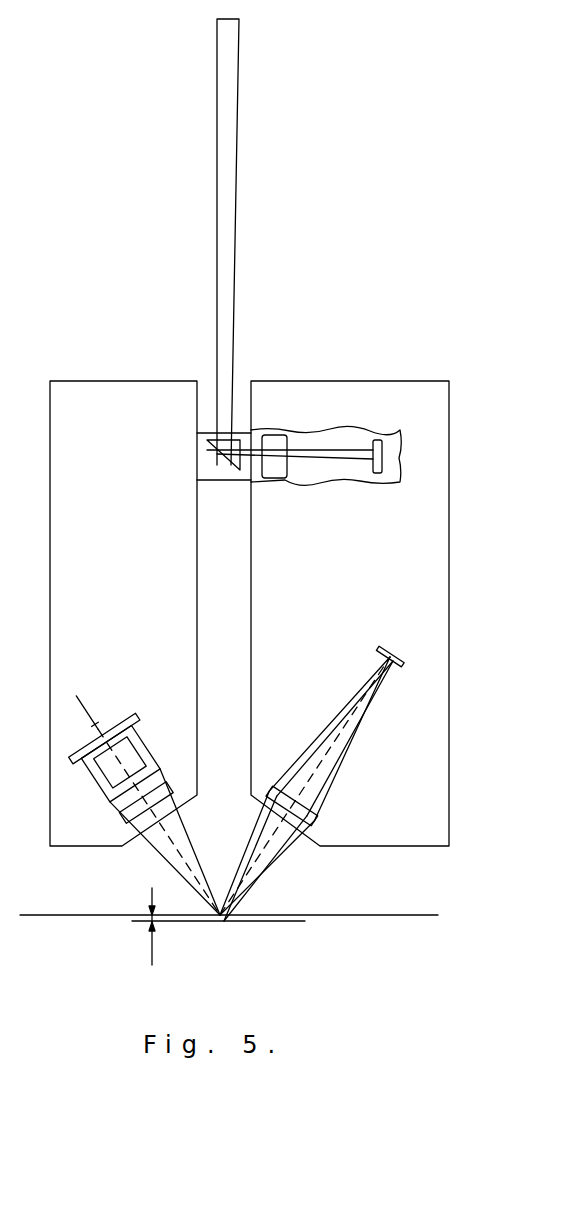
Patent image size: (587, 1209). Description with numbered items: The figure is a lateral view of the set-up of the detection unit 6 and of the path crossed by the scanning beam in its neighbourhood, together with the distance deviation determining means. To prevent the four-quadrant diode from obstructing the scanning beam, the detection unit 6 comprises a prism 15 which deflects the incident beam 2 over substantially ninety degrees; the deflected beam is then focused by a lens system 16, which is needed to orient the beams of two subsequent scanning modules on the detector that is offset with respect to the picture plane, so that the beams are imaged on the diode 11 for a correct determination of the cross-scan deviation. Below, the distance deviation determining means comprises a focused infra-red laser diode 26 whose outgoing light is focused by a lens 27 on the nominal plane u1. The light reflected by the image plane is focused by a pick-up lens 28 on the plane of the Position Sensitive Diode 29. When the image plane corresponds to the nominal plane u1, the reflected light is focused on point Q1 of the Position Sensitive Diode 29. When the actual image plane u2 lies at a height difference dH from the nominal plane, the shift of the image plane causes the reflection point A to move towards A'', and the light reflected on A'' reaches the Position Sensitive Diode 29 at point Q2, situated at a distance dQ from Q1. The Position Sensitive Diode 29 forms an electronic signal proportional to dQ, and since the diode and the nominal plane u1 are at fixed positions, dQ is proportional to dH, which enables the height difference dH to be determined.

The incident beam 2 is at (234, 242).
The prism 15 is at (215, 448).
The lens system 16 is at (270, 480).
The detection unit 6 is at (320, 483).
The diode 11 is at (376, 475).
The focused infra-red laser diode 26 is at (137, 735).
The lens 27 is at (172, 788).
The pick-up lens 28 is at (274, 797).
The Position Sensitive Diode 29 is at (410, 653).
The distance between Q2 and Q1 dQ is at (390, 648).
The point Q1 is at (393, 665).
The point Q2 is at (385, 655).
The point A is at (188, 902).
The point A'' is at (242, 952).
The height difference dH is at (152, 946).
The nominal plane u1 is at (388, 917).
The actual image plane u2 is at (305, 921).